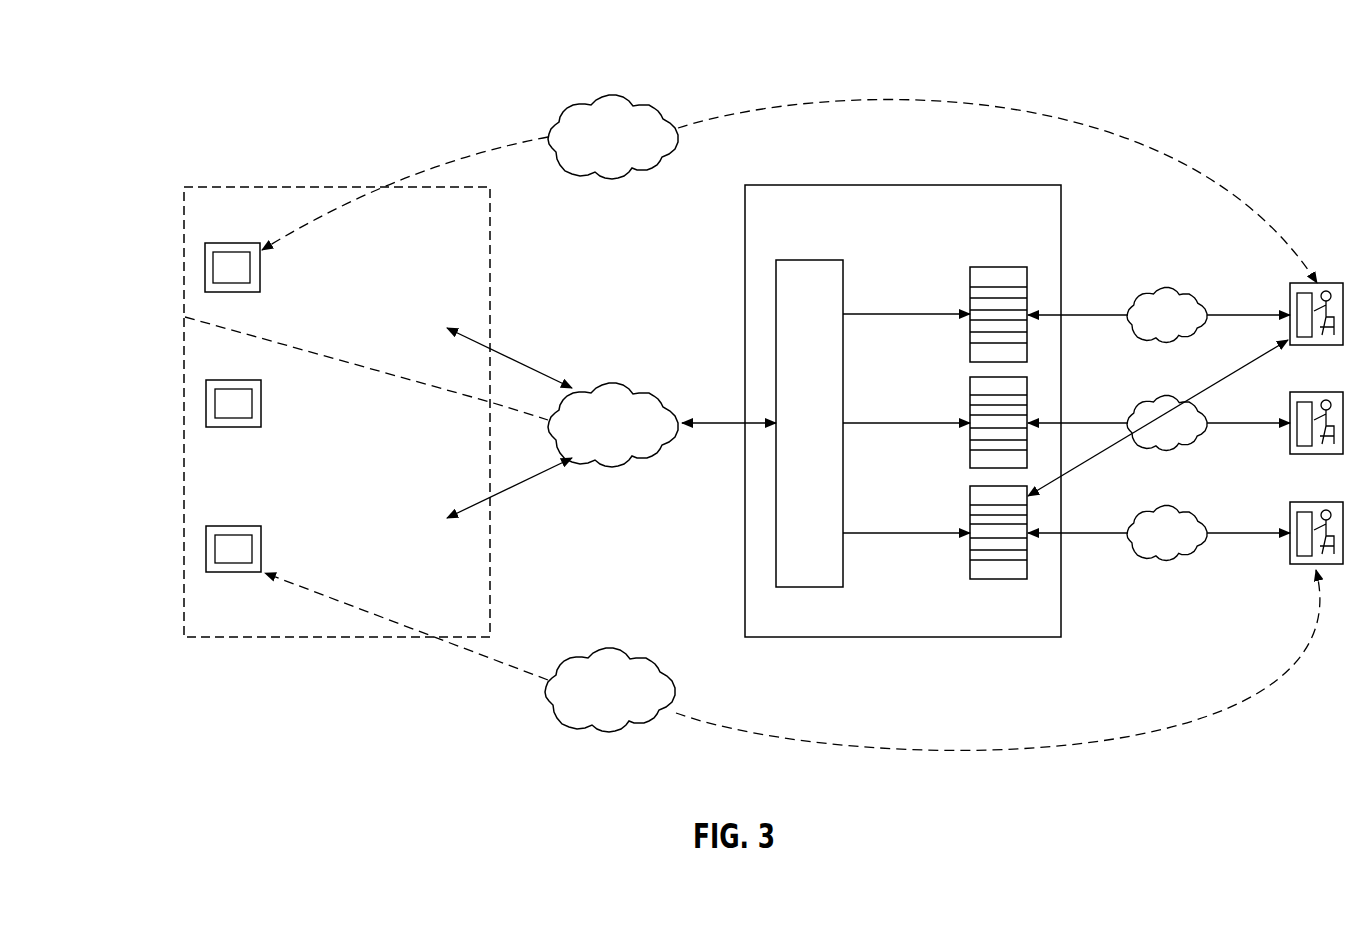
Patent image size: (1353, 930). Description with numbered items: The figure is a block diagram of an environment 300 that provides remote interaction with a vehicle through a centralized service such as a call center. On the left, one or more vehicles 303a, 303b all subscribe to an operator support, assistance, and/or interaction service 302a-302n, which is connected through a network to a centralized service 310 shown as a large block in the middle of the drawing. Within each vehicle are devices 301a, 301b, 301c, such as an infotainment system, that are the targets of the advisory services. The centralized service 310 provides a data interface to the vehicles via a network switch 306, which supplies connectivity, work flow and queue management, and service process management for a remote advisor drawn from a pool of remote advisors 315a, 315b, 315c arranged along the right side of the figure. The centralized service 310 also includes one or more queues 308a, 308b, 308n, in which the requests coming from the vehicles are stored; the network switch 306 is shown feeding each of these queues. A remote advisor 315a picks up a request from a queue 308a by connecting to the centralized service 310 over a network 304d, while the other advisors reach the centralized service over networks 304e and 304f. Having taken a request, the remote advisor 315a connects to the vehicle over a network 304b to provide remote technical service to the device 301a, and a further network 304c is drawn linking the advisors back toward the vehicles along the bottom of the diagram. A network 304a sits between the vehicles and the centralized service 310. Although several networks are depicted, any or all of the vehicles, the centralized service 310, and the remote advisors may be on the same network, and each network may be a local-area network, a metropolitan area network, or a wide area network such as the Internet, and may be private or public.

The environment 300 is at (371, 50).
The device 301a is at (261, 268).
The device 301b is at (261, 400).
The device 301c is at (261, 548).
The operator support, assistance, and/or interaction service 302a-302n is at (228, 186).
The vehicle 303a is at (463, 260).
The vehicle 303b is at (463, 592).
The network 304a is at (612, 383).
The network 304b is at (612, 95).
The network 304c is at (610, 648).
The network 304d is at (1165, 290).
The network 304e is at (1165, 398).
The network 304f is at (1165, 508).
The network switch 306 is at (811, 260).
The queue 308a is at (970, 285).
The queue 308b is at (970, 390).
The queue 308n is at (970, 500).
The centralized service 310 is at (1061, 590).
The remote advisor 315a is at (1290, 300).
The remote advisor 315b is at (1290, 448).
The remote advisor 315c is at (1290, 556).